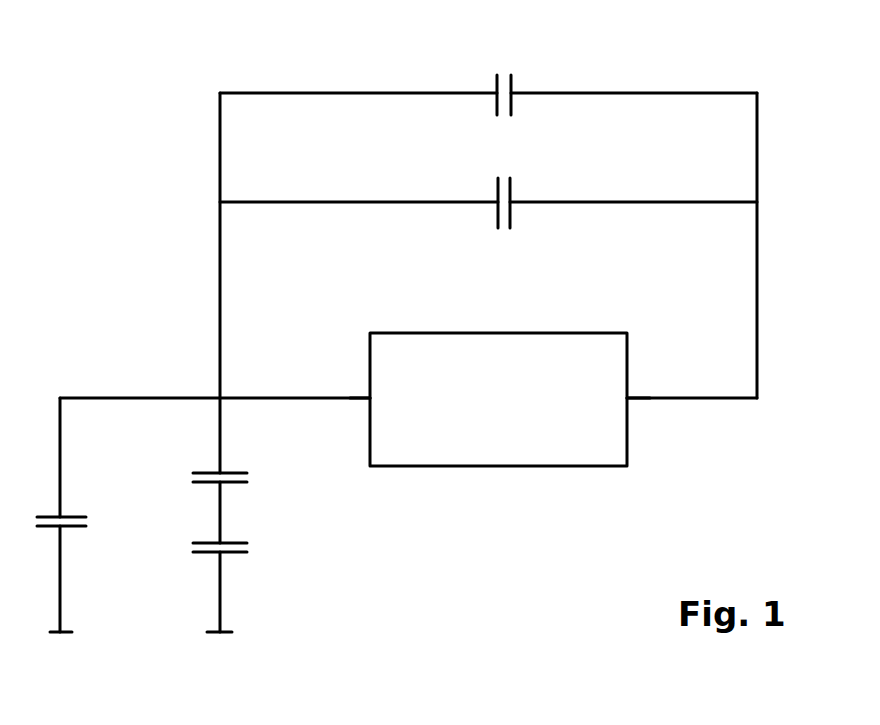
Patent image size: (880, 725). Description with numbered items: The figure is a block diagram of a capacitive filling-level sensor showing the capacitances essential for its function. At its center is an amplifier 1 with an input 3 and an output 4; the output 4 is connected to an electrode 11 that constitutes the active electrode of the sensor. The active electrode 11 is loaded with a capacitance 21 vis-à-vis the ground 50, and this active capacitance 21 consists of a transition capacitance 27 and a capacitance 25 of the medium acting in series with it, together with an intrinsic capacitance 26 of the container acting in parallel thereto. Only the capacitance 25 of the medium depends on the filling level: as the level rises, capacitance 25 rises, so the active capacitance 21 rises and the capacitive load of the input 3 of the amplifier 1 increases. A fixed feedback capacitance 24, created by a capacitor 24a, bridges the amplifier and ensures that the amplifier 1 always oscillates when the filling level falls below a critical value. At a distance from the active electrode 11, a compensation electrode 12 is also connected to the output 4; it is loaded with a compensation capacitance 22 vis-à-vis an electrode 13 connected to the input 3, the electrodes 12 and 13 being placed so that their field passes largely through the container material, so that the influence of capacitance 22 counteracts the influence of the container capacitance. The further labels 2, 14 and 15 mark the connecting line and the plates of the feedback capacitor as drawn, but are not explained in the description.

The amplifier 1 is at (518, 411).
The connecting line 2 is at (753, 420).
The input of the amplifier 3 is at (370, 400).
The output of the amplifier 4 is at (623, 400).
The active electrode 11 is at (228, 465).
The compensation electrode 12 is at (516, 80).
The electrode 13 is at (480, 78).
The electrode of second capacitor 14 is at (513, 213).
The electrode of second capacitor 15 is at (490, 213).
The active capacitance 21 is at (108, 518).
The compensation capacitance 22 is at (495, 60).
The fixed feedback capacitance 24 is at (487, 237).
The capacitor 24a is at (487, 217).
The capacitance of the medium 25 is at (182, 545).
The intrinsic capacitance of the container 26 is at (90, 520).
The transition capacitance 27 is at (178, 480).
The ground 50 is at (139, 651).